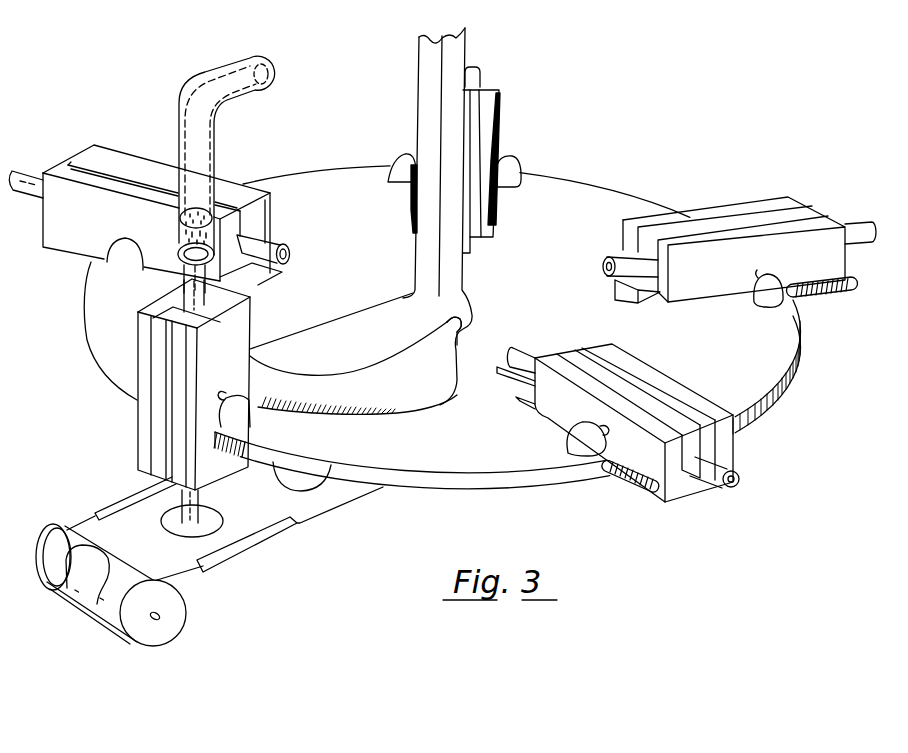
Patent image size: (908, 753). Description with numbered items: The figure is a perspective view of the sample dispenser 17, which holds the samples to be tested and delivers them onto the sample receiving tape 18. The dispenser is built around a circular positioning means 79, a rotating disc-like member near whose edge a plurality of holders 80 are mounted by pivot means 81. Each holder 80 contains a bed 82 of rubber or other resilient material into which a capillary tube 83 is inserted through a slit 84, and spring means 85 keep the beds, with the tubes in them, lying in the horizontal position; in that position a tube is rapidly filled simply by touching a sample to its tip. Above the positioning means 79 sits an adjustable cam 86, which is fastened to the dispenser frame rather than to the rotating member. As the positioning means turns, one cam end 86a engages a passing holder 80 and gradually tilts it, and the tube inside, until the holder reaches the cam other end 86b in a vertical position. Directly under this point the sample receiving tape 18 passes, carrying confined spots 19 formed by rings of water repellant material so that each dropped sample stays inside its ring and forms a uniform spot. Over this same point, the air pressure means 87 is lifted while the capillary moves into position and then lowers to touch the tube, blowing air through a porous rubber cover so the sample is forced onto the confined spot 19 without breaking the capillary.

The sample dispenser 17 is at (590, 191).
The sample receiving tape 18 is at (178, 575).
The confined spots 19 is at (103, 560).
The circular positioning means 79 is at (765, 397).
The holders 80 is at (743, 244).
The pivot means 81 is at (568, 444).
The clamp block 82 is at (587, 350).
The capillary tube 83 is at (742, 481).
The slit 84 is at (813, 212).
The spring means 85 is at (622, 482).
The adjustable cam 86 is at (365, 369).
The cam end 86a is at (450, 395).
The cam other end 86b is at (258, 347).
The air pressure means 87 is at (199, 91).